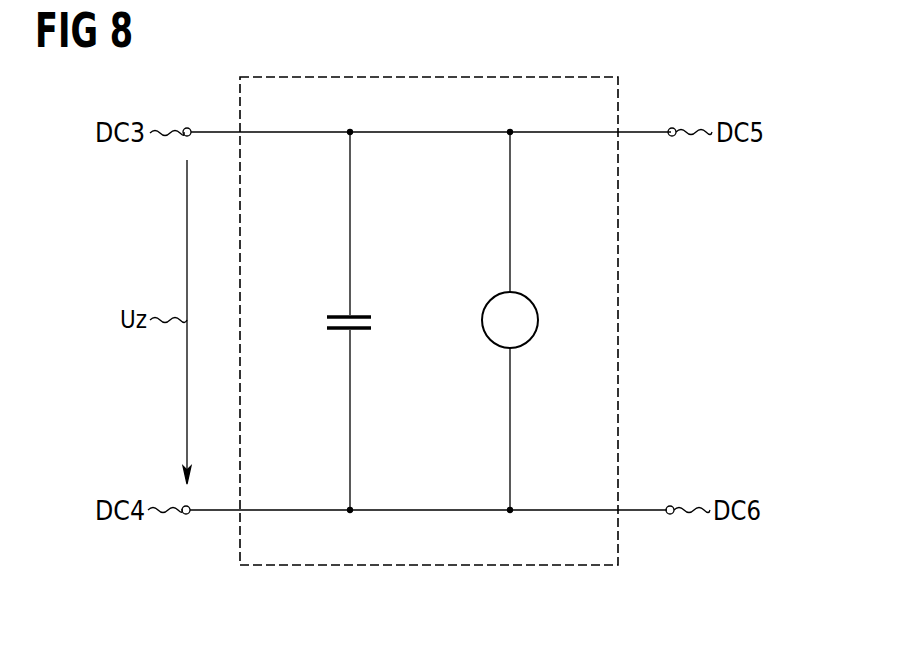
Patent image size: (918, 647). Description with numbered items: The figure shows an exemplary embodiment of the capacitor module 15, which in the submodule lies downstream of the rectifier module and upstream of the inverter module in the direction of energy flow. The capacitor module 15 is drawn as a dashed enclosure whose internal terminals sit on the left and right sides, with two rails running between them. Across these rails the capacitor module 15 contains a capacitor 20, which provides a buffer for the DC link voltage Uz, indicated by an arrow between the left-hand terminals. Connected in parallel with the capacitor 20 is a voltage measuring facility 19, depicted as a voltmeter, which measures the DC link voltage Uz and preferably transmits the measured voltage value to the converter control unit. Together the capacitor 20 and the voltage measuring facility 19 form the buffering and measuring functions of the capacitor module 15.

The capacitor module 15 is at (240, 553).
The voltage measuring facility 19 is at (484, 318).
The capacitor 20 is at (335, 312).